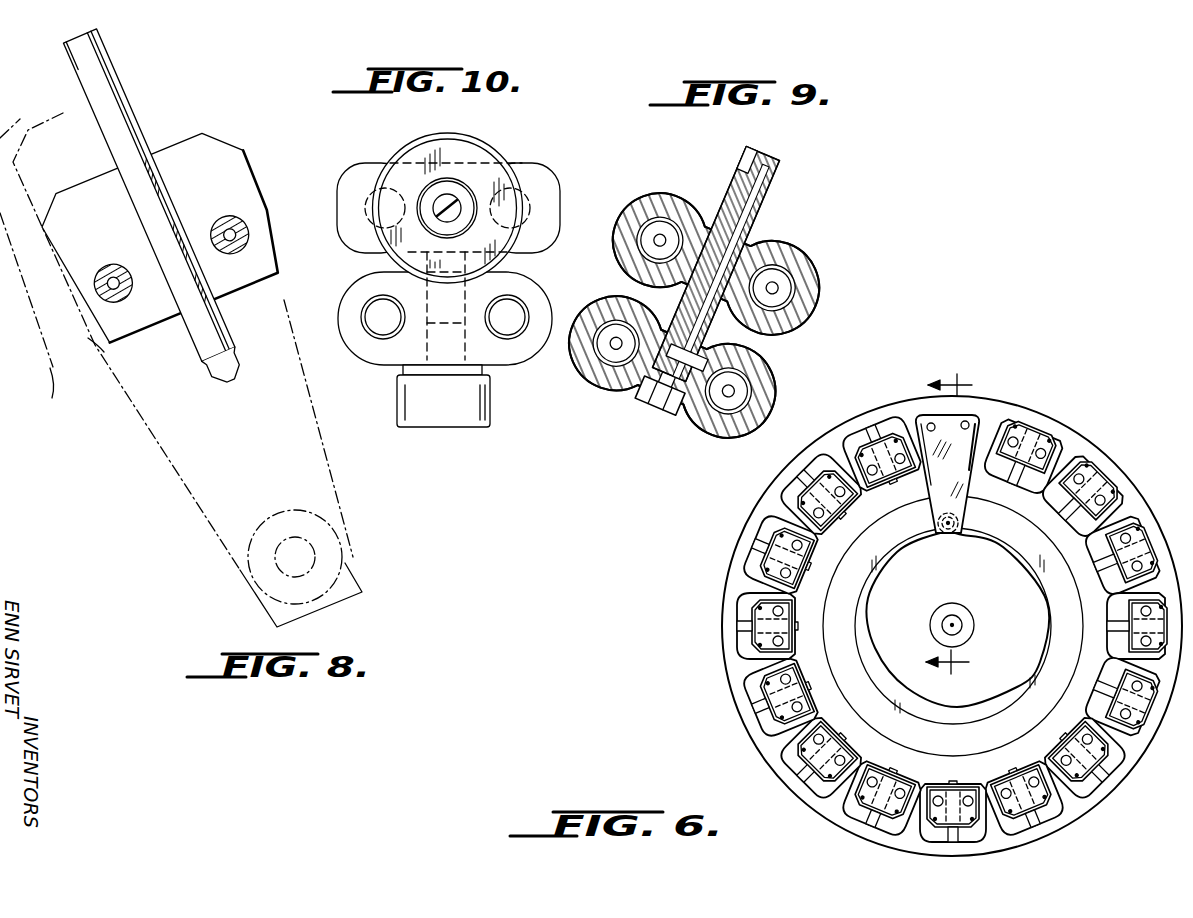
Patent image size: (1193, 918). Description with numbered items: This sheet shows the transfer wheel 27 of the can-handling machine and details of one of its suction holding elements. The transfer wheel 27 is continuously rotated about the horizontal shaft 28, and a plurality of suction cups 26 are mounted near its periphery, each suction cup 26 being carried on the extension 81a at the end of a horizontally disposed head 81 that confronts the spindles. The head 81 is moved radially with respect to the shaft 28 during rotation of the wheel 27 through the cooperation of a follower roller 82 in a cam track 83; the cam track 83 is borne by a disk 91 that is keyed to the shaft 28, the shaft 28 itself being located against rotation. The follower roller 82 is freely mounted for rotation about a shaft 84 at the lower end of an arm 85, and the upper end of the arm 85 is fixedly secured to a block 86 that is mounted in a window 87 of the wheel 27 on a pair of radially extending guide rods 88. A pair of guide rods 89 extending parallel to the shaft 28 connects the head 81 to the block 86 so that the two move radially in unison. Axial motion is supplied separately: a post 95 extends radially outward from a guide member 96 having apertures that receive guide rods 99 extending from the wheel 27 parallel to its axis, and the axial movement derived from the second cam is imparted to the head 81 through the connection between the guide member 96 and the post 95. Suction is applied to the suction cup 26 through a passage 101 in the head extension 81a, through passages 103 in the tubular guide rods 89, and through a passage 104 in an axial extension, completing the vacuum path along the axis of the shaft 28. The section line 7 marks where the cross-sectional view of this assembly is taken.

In FIG. 6, the section line 7— 7 is at (938, 524).
In FIG. 10, the suction cup 26 is at (450, 193).
In FIG. 6, the transfer wheel 27 is at (1072, 429).
In FIG. 6, the shaft 28 is at (974, 622).
In FIG. 10, the head 81 is at (545, 176).
In FIG. 9, the head 81 is at (820, 284).
In FIG. 10, the head extension 81a is at (414, 140).
In FIG. 8, the follower roller 82 is at (345, 563).
In FIG. 6, the follower roller 82 is at (955, 535).
In FIG. 6, the cam track 83 is at (865, 624).
In FIG. 8, the shaft 84 is at (313, 543).
In FIG. 6, the shaft 84 is at (944, 530).
In FIG. 8, the arm 85 is at (191, 493).
In FIG. 6, the arm 85 is at (936, 509).
In FIG. 8, the block 86 is at (220, 158).
In FIG. 6, the block 86 is at (856, 458).
In FIG. 6, the window 87 is at (850, 442).
In FIG. 8, the guide rods 88 is at (127, 97).
In FIG. 6, the guide rods 88 is at (878, 427).
In FIG. 8, the guide rods 89 is at (232, 216).
In FIG. 10, the guide rods 89 is at (530, 207).
In FIG. 9, the guide rods 89 is at (641, 238).
In FIG. 6, the disk 91 is at (963, 700).
In FIG. 9, the post 95 is at (768, 208).
In FIG. 10, the guide member 96 is at (518, 366).
In FIG. 9, the guide member 96 is at (688, 432).
In FIG. 10, the guide rods 99 is at (368, 308).
In FIG. 9, the guide rods 99 is at (612, 356).
In FIG. 10, the passage 101 is at (455, 190).
In FIG. 9, the passages 103 is at (665, 226).
In FIG. 8, the passage 104 is at (238, 229).